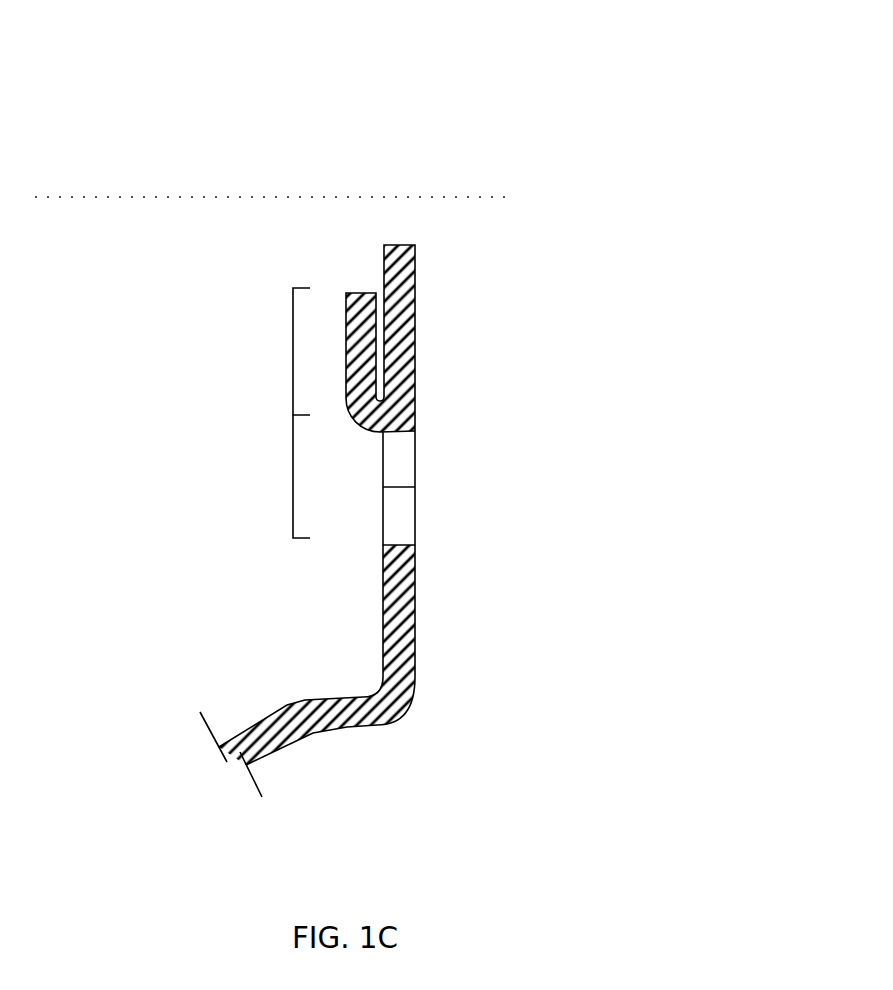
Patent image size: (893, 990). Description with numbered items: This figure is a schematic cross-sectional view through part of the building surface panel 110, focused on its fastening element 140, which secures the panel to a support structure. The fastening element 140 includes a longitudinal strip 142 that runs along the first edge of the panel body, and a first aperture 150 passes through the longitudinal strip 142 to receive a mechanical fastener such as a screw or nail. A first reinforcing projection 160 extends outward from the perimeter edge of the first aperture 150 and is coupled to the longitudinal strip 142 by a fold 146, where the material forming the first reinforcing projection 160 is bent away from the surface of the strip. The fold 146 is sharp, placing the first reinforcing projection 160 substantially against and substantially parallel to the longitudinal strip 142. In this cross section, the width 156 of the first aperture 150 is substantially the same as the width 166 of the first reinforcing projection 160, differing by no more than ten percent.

The building surface panel 110 is at (495, 112).
The fastening element 140 is at (178, 430).
The longitudinal strip 142 is at (415, 305).
The fold 146 is at (368, 452).
The first aperture 150 is at (397, 512).
The width of first aperture 156 is at (293, 478).
The first reinforcing projection 160 is at (346, 353).
The width of first reinforcing projection 166 is at (293, 352).